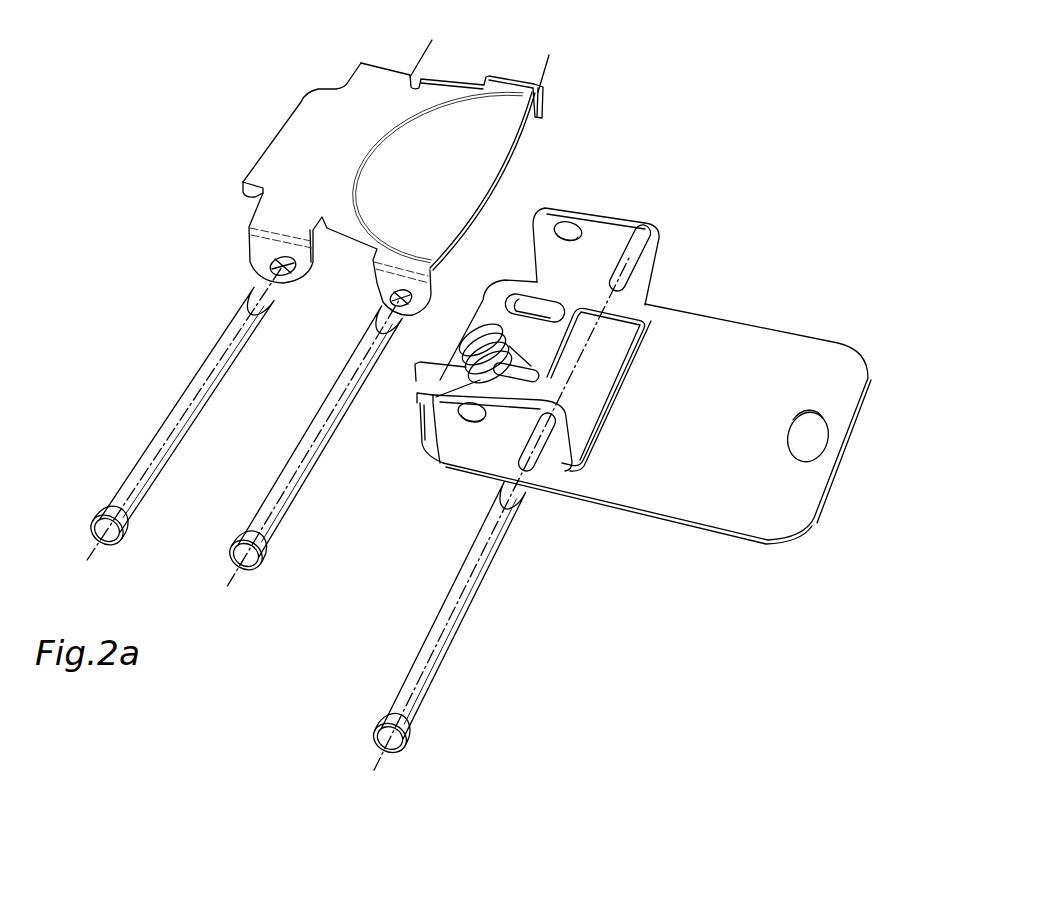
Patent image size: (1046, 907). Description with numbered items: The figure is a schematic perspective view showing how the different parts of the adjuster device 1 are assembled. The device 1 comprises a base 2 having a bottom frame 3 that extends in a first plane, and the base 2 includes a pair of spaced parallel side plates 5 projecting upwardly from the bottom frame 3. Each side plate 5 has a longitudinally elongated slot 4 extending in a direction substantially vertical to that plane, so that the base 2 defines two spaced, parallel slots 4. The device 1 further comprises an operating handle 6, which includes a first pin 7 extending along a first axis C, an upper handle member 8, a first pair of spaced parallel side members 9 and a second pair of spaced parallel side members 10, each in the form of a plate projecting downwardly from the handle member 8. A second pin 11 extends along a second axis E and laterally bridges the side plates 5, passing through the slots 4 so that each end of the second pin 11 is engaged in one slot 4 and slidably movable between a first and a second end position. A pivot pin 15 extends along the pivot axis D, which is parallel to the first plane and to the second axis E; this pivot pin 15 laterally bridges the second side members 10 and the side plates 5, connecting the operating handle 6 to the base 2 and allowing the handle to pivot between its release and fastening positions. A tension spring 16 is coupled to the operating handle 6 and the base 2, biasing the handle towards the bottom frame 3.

The adjuster device 1 is at (752, 93).
The base 2 is at (534, 358).
The bottom frame 3 is at (718, 338).
The longitudinally elongated slot 4 is at (636, 245).
The side plate 5 is at (610, 232).
The operating handle 6 is at (394, 180).
The first pin 7 is at (313, 458).
The upper handle member 8 is at (501, 145).
The first pair of spaced parallel side members 9 is at (543, 95).
The second pair of spaced parallel side members 10 is at (415, 77).
The second pin 11 is at (483, 514).
The pivot pin 15 is at (184, 425).
The tension spring 16 is at (490, 327).
The first axis C is at (225, 588).
The pivot axis D is at (87, 560).
The second axis E is at (376, 754).